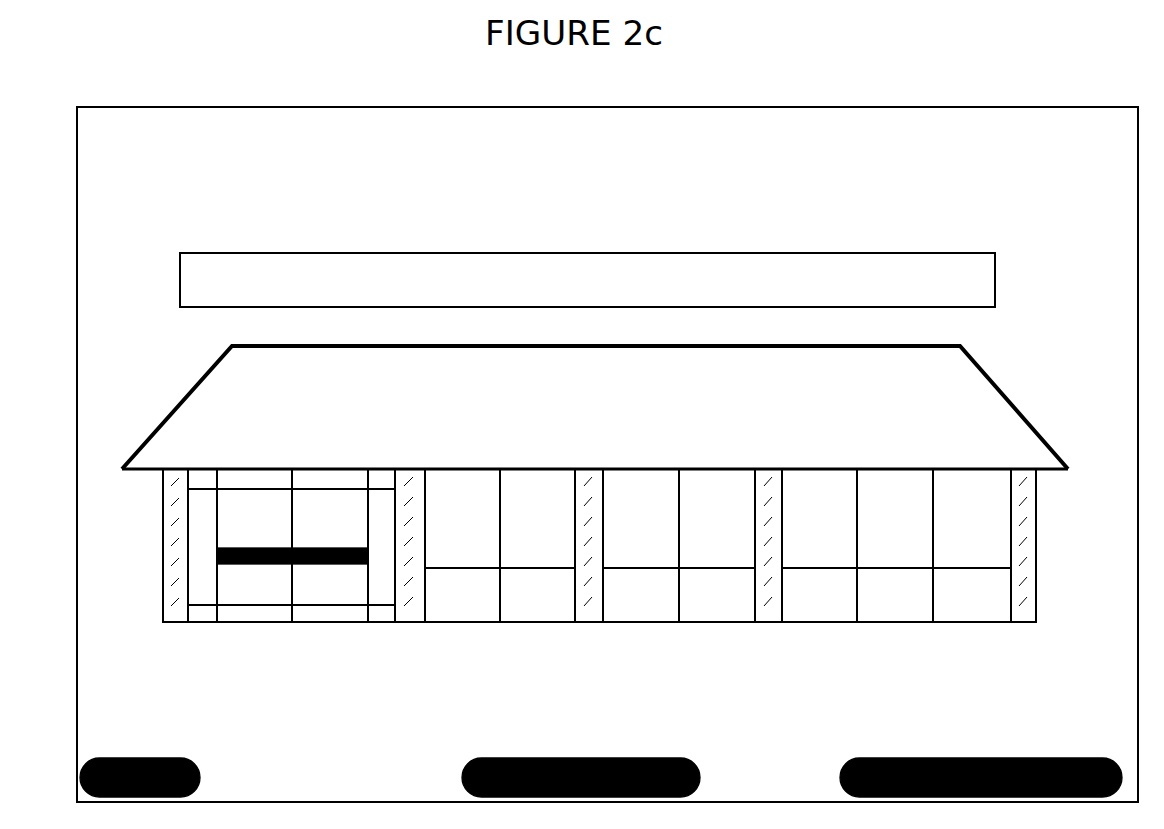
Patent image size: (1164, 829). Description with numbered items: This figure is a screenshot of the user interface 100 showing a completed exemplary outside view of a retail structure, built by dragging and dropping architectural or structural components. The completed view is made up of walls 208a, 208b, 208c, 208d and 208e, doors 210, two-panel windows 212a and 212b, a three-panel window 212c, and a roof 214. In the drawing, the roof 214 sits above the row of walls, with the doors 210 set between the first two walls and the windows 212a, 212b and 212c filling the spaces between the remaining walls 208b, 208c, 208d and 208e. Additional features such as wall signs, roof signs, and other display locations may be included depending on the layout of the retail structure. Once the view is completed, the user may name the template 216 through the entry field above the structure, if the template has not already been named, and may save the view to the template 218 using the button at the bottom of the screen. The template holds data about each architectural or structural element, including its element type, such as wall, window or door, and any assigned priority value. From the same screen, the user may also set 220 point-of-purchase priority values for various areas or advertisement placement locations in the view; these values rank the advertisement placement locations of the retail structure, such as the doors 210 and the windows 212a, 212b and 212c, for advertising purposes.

The user interface 100 is at (72, 158).
The name the template option 216 is at (932, 252).
The roof 214 is at (178, 398).
The wall 208a is at (176, 623).
The wall 208b is at (410, 623).
The wall 208c is at (590, 623).
The wall 208d is at (772, 623).
The wall 208e is at (1022, 623).
The doors 210 is at (300, 592).
The two-panel window 212a is at (516, 598).
The two-panel window 212b is at (689, 605).
The three-panel window 212c is at (895, 605).
The save the view to the template option 218 is at (495, 757).
The set P.O.P. priority values option 220 is at (888, 757).